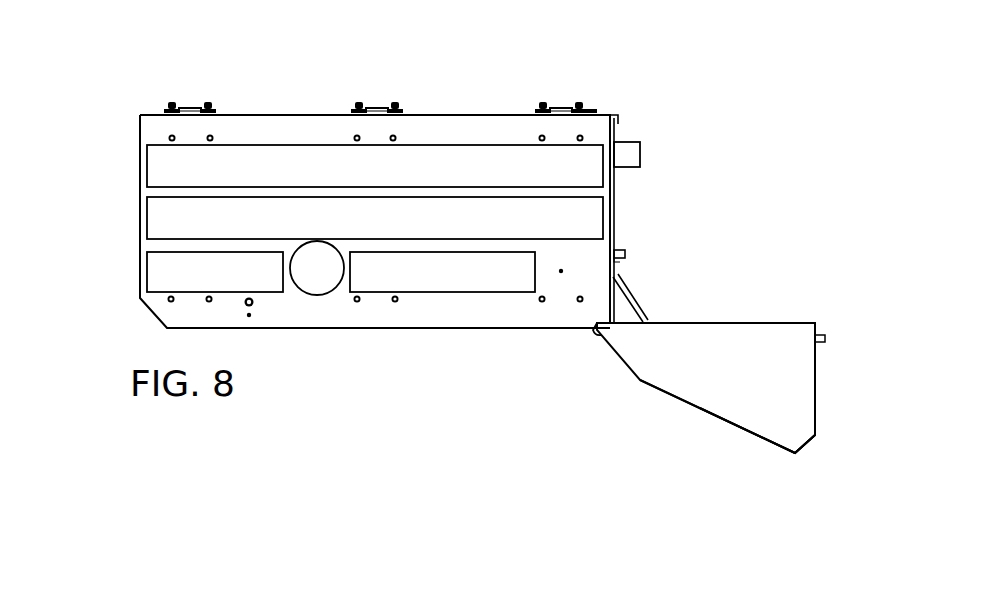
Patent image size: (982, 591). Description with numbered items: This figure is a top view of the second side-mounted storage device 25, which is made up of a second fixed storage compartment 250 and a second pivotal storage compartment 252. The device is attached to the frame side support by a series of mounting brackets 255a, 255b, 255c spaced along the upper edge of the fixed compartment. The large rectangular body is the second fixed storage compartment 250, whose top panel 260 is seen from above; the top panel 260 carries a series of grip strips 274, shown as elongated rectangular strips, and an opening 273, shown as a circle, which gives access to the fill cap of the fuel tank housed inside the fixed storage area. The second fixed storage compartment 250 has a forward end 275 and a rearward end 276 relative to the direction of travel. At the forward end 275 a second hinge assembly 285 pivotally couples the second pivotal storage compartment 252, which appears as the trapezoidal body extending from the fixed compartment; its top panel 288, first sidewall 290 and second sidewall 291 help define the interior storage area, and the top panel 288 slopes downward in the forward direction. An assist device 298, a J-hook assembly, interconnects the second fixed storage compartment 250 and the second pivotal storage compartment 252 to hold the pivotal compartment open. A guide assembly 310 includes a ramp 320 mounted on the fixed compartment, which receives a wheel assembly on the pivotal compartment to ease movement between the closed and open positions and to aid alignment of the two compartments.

The second side-mounted storage device 25 is at (95, 320).
The second fixed storage compartment 250 is at (314, 352).
The second pivotal storage compartment 252 is at (673, 420).
The mounting bracket 255a is at (197, 100).
The mounting bracket 255b is at (383, 100).
The mounting bracket 255c is at (562, 100).
The top panel 260 is at (445, 315).
The opening 273 is at (313, 266).
The grip strips 274 is at (435, 168).
The forward end 275 is at (602, 96).
The rearward end 276 is at (138, 100).
The second hinge assembly 285 is at (620, 316).
The top panel 288 is at (787, 385).
The first sidewall 290 is at (818, 415).
The second sidewall 291 is at (770, 445).
The assist device 298 is at (633, 280).
The guide assembly 310 is at (645, 133).
The ramp 320 is at (640, 153).